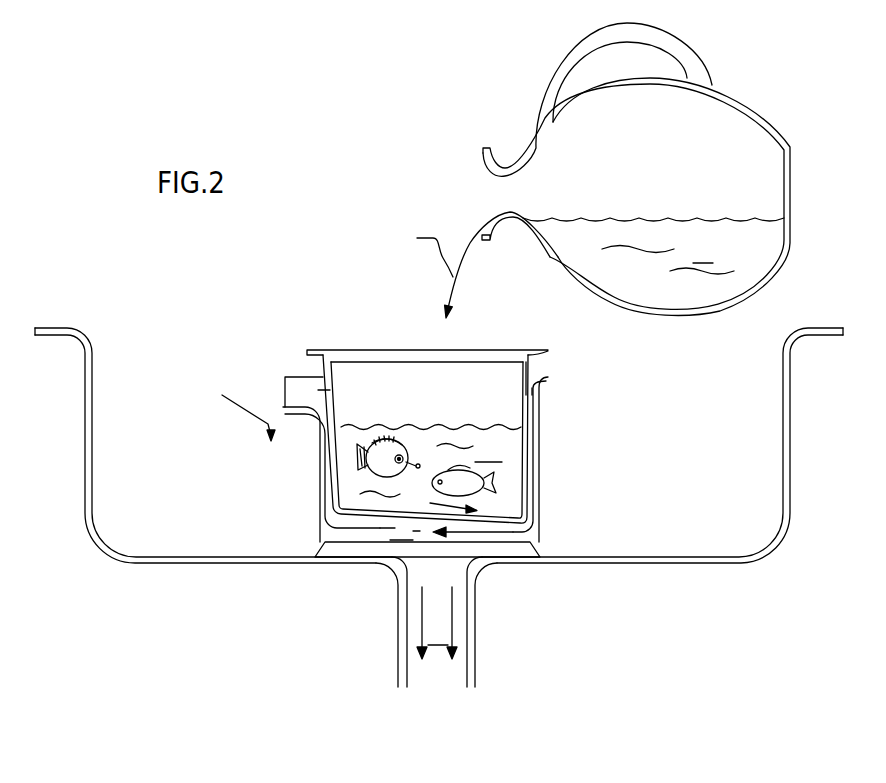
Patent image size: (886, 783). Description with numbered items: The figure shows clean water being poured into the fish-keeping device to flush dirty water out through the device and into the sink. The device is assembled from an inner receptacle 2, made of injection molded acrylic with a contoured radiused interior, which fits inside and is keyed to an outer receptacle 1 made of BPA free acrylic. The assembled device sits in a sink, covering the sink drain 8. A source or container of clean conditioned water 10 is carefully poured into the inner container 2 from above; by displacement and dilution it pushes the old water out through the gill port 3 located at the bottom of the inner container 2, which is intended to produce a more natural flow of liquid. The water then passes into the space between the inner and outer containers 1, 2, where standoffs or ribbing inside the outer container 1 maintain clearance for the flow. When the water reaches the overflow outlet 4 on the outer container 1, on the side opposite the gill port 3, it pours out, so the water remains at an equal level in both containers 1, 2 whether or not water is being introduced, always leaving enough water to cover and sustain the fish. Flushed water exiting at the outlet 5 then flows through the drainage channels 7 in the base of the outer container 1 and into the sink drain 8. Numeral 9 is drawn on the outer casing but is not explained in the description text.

The source or container of clean conditioned water 10 is at (530, 147).
The inner receptacle/container 2 is at (310, 348).
The outer receptacle/container 1 is at (538, 435).
The overflow outlet 4 is at (528, 395).
The outer casing 9 is at (541, 474).
The gill port 3 is at (485, 513).
The outlet 5 is at (283, 402).
The drainage channels 7 is at (313, 548).
The sink drain 8 is at (477, 617).